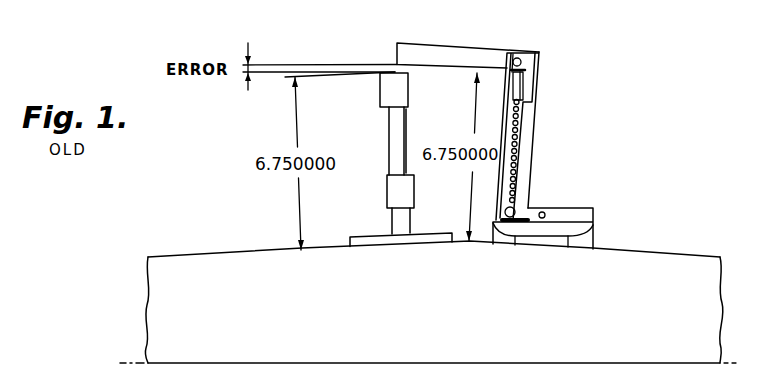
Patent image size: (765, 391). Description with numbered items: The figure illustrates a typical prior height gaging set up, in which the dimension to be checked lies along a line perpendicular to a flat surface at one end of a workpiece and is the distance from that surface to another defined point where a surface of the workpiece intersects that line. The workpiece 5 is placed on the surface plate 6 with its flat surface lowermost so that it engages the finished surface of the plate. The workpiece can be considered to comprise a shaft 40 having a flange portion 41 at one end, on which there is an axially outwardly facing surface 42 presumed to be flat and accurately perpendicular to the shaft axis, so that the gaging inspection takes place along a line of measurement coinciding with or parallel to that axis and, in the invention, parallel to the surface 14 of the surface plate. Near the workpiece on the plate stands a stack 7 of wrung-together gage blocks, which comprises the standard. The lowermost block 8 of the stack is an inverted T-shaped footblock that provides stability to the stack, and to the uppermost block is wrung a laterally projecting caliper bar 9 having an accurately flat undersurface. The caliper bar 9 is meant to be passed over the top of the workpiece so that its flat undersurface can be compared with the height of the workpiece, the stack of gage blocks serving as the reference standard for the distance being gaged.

The workpiece 5 is at (387, 116).
The surface plate 6 is at (231, 257).
The stack of wrung-together gage blocks 7 is at (503, 88).
The lowermost block 8 is at (562, 208).
The caliper bar 9 is at (430, 50).
The surface of the surface plate 14 is at (625, 248).
The shaft 40 is at (392, 130).
The flange portion 41 is at (365, 233).
The axially outwardly facing surface 42 is at (401, 247).